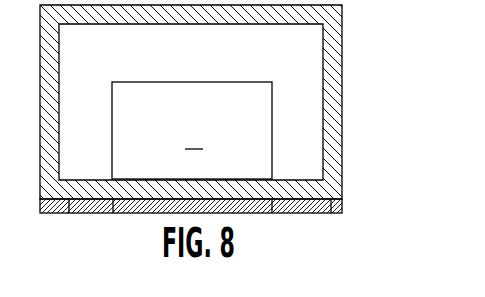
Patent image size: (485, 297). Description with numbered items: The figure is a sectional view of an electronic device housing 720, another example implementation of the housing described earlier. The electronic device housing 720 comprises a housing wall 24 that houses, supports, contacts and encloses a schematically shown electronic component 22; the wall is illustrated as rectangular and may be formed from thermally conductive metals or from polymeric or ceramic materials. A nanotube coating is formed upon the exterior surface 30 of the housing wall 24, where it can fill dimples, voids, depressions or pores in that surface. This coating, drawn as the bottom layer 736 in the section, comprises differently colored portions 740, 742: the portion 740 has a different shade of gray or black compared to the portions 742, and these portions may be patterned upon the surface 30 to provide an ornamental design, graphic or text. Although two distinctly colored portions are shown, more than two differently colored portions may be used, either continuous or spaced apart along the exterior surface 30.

The electronic device housing 720 is at (345, 59).
The housing wall 24 is at (343, 138).
The electronic component 22 is at (205, 80).
The bottom layer 736 is at (343, 205).
The portions 742 is at (53, 214).
The exterior surface 30 is at (70, 214).
The portion 740 is at (252, 214).